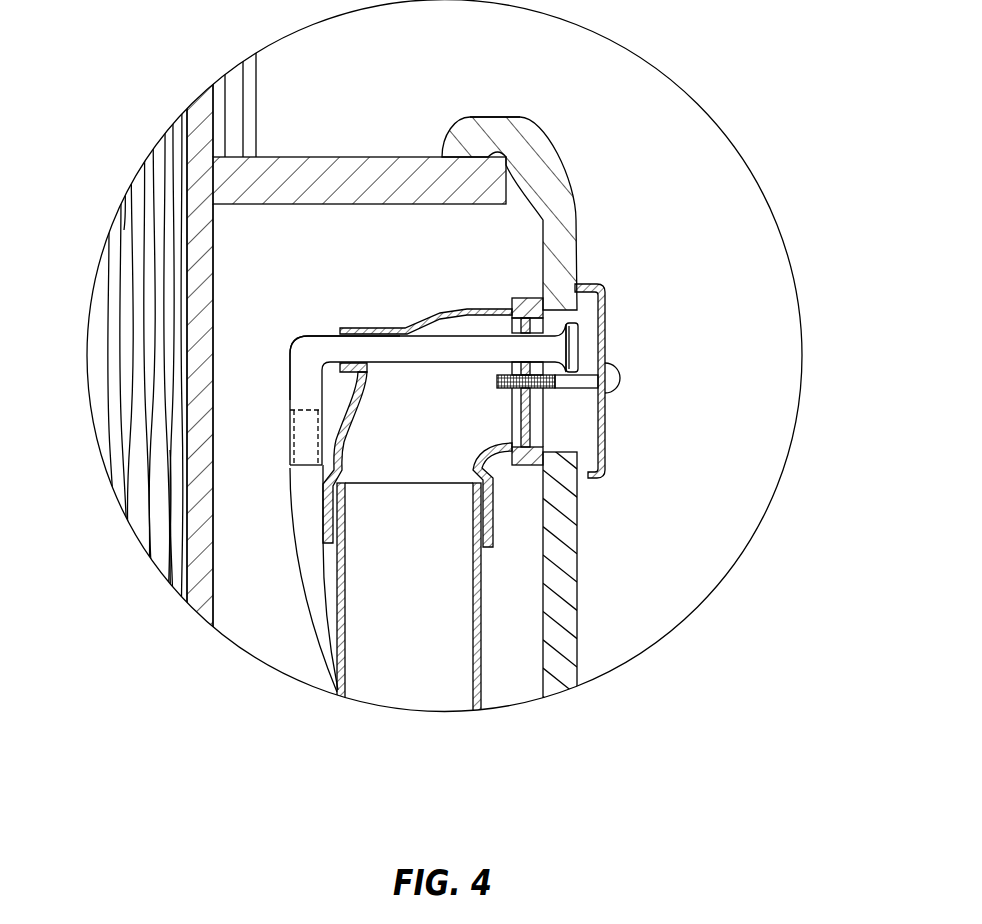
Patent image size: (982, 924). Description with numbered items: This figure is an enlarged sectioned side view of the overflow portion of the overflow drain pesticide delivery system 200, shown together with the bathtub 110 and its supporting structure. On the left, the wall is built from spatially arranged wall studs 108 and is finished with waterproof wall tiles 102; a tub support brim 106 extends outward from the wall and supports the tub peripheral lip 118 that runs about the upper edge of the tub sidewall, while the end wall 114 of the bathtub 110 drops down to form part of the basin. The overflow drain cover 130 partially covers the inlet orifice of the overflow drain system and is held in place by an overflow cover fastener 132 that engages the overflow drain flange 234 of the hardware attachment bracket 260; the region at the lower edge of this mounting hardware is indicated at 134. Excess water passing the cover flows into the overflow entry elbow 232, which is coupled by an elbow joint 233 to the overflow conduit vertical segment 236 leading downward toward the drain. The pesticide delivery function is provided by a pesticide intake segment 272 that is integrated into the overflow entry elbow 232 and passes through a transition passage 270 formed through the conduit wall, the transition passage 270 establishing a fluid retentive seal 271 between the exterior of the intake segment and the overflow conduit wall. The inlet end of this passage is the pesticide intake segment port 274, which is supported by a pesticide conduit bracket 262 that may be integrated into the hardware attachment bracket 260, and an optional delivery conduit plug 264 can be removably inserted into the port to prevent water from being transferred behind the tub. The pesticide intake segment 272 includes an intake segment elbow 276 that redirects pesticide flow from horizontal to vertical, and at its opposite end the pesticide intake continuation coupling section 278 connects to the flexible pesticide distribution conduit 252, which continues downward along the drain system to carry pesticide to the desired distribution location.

The wall tiles 102 is at (257, 97).
The tub support brim 106 is at (338, 157).
The wall studs 108 is at (122, 200).
The bathtub 110 is at (580, 160).
The end wall 114 is at (577, 560).
The tub peripheral lip 118 is at (497, 118).
The overflow drain cover 130 is at (600, 305).
The overflow cover fastener 132 is at (617, 382).
The mounting bracket 134 is at (588, 479).
The overflow drain pesticide delivery system 200 is at (288, 292).
The overflow entry elbow 232 is at (433, 311).
The elbow joint 233 is at (325, 500).
The overflow drain flange 234 is at (527, 297).
The overflow conduit vertical segment 236 is at (335, 603).
The pesticide distribution conduit 252 is at (297, 563).
The hardware attachment bracket 260 is at (523, 417).
The pesticide conduit bracket 262 is at (510, 327).
The delivery conduit plug 264 is at (580, 349).
The transition passage 270 is at (373, 331).
The fluid retentive seal 271 is at (325, 334).
The pesticide intake segment 272 is at (427, 362).
The pesticide intake segment port 274 is at (565, 335).
The intake segment elbow 276 is at (300, 337).
The pesticide intake continuation coupling section 278 is at (290, 440).